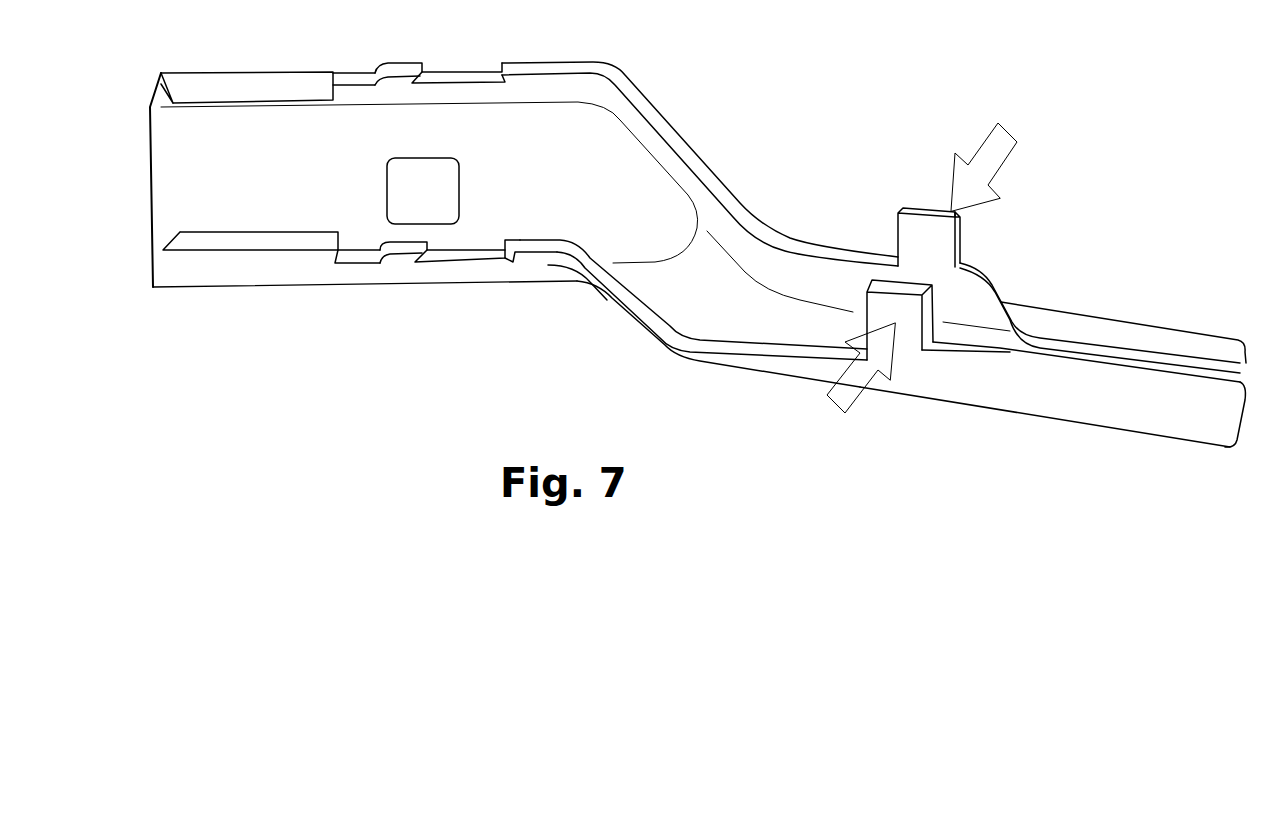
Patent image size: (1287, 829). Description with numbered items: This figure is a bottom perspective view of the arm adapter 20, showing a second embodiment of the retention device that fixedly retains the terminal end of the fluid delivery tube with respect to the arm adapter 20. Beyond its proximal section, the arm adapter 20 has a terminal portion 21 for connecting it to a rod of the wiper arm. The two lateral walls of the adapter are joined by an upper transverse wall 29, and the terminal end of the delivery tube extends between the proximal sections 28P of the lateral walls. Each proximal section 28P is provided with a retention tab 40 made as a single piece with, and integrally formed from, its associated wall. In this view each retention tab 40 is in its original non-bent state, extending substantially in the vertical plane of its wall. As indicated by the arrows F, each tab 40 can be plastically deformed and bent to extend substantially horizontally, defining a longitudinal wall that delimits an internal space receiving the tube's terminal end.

The arm adapter 20 is at (670, 265).
The terminal portion 21 is at (1173, 314).
The proximal sections of the lateral walls 28P is at (857, 246).
The upper transverse wall 29 is at (205, 178).
The retention tab 40 is at (940, 235).
The arrows indicating bending F is at (993, 155).